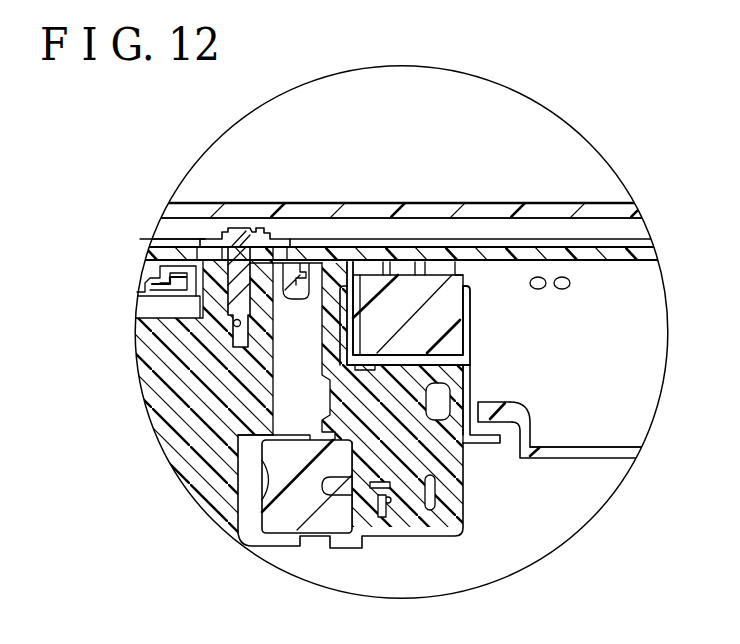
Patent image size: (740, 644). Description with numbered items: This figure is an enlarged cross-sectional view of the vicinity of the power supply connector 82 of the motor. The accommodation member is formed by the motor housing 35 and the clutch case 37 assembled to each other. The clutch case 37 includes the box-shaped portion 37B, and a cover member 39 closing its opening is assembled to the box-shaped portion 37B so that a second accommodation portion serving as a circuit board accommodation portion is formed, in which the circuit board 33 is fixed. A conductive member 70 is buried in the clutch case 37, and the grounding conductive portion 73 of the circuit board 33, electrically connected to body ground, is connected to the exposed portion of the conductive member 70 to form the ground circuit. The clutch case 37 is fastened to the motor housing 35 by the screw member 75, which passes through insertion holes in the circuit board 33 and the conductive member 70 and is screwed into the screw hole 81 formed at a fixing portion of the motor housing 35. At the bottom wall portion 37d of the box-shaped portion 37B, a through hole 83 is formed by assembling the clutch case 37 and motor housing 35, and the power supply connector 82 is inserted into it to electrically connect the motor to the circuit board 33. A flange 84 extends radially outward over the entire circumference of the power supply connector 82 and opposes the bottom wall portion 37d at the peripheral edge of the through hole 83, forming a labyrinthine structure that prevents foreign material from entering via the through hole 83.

The cover member 39 is at (432, 203).
The screw member 75 is at (244, 230).
The grounding conductive portion 73 is at (281, 241).
The conductive member 70 is at (205, 240).
The clutch case 37 is at (147, 281).
The screw hole 81 is at (233, 334).
The power supply connector 82 is at (470, 300).
The through hole 83 is at (478, 406).
The flange 84 is at (487, 436).
The motor housing 35 is at (246, 546).
The circuit board 33 is at (594, 261).
The bottom wall portion 37d is at (592, 446).
The box-shaped portion 37B is at (545, 459).